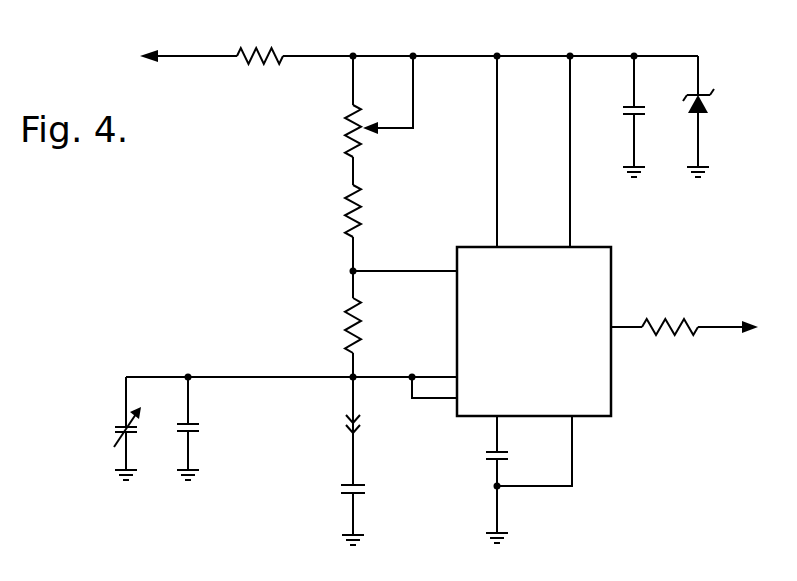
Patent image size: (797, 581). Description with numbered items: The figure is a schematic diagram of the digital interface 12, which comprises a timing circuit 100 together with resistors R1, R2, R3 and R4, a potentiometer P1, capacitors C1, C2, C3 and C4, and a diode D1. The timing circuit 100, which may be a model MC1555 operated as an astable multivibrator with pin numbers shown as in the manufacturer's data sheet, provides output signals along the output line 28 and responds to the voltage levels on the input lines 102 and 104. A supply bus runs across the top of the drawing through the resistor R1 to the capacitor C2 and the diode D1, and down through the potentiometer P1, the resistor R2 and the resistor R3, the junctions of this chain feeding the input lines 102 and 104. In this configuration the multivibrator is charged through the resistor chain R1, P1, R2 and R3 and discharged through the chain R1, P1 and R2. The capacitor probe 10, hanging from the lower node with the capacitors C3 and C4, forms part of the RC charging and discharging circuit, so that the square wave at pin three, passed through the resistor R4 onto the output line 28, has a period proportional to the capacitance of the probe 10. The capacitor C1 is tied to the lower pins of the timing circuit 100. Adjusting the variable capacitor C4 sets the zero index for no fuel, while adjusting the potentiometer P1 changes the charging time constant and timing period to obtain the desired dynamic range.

The resistor R1 is at (282, 44).
The potentiometer P1 is at (347, 133).
The resistor R2 is at (346, 201).
The resistor R3 is at (346, 320).
The resistor R4 is at (650, 338).
The capacitor C1 is at (508, 455).
The capacitor C2 is at (614, 106).
The capacitor C3 is at (202, 430).
The variable capacitor C4 is at (113, 424).
The diode D1 is at (714, 89).
The interface 12 is at (306, 245).
The timing circuit 100 is at (611, 261).
The input line 102 is at (386, 278).
The input line 104 is at (372, 375).
The output line 28 is at (718, 327).
The capacitor probe 10 is at (340, 489).